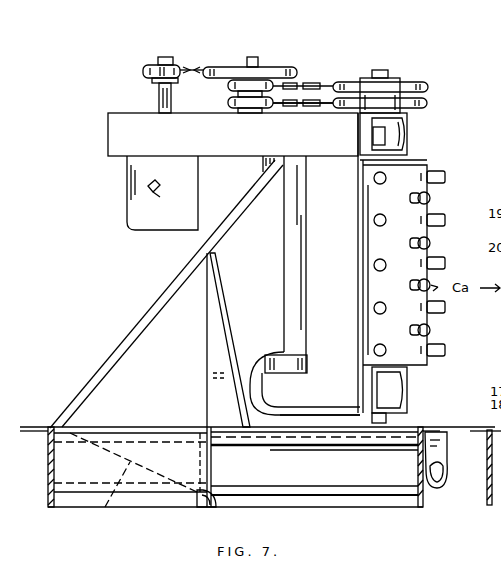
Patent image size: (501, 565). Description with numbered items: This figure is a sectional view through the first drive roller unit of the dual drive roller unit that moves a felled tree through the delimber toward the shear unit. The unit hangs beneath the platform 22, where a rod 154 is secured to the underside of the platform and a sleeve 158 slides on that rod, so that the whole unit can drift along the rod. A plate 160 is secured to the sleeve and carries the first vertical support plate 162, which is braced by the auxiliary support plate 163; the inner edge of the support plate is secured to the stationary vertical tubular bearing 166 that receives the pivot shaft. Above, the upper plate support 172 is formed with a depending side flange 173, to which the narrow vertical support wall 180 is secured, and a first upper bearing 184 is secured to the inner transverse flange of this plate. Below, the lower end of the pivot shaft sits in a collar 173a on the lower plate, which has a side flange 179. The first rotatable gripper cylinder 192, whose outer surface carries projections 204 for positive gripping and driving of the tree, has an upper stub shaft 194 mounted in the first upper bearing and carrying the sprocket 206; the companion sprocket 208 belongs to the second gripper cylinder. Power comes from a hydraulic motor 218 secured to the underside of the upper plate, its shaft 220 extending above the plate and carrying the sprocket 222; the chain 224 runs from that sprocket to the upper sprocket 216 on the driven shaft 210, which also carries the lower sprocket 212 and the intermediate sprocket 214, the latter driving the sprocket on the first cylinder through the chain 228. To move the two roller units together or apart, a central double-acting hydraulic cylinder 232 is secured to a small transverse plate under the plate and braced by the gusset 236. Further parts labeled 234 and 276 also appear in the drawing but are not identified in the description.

The platform 22 is at (28, 428).
The rod 154 is at (370, 471).
The sleeve 158 is at (80, 470).
The plate 160 is at (177, 427).
The first vertical support plate 162 is at (122, 347).
The auxiliary support plate 163 is at (228, 300).
The stationary vertical tubular bearing 166 is at (300, 270).
The upper plate support 172 is at (126, 112).
The depending side flange 173 is at (118, 127).
The collar 173a is at (287, 372).
The side flange 179 is at (343, 407).
The narrow vertical support wall 180 is at (342, 180).
The first upper bearing 184 is at (388, 127).
The first rotatable gripper cylinder 192 is at (413, 252).
The stub shaft 194 is at (381, 70).
The projections 204 is at (440, 220).
The sprocket 206 is at (415, 82).
The sprocket 208 is at (428, 104).
The driven shaft 210 is at (252, 62).
The lower sprocket 212 is at (243, 110).
The intermediate sprocket 214 is at (232, 88).
The upper sprocket 216 is at (281, 68).
The hydraulic motor 218 is at (124, 190).
The shaft 220 is at (157, 89).
The sprocket 222 is at (162, 66).
The chain 224 is at (195, 70).
The chain 228 is at (313, 85).
The central double-acting hydraulic cylinder 232 is at (438, 488).
The guide line 234 is at (200, 455).
The gusset 236 is at (118, 492).
The cable 276 is at (317, 105).